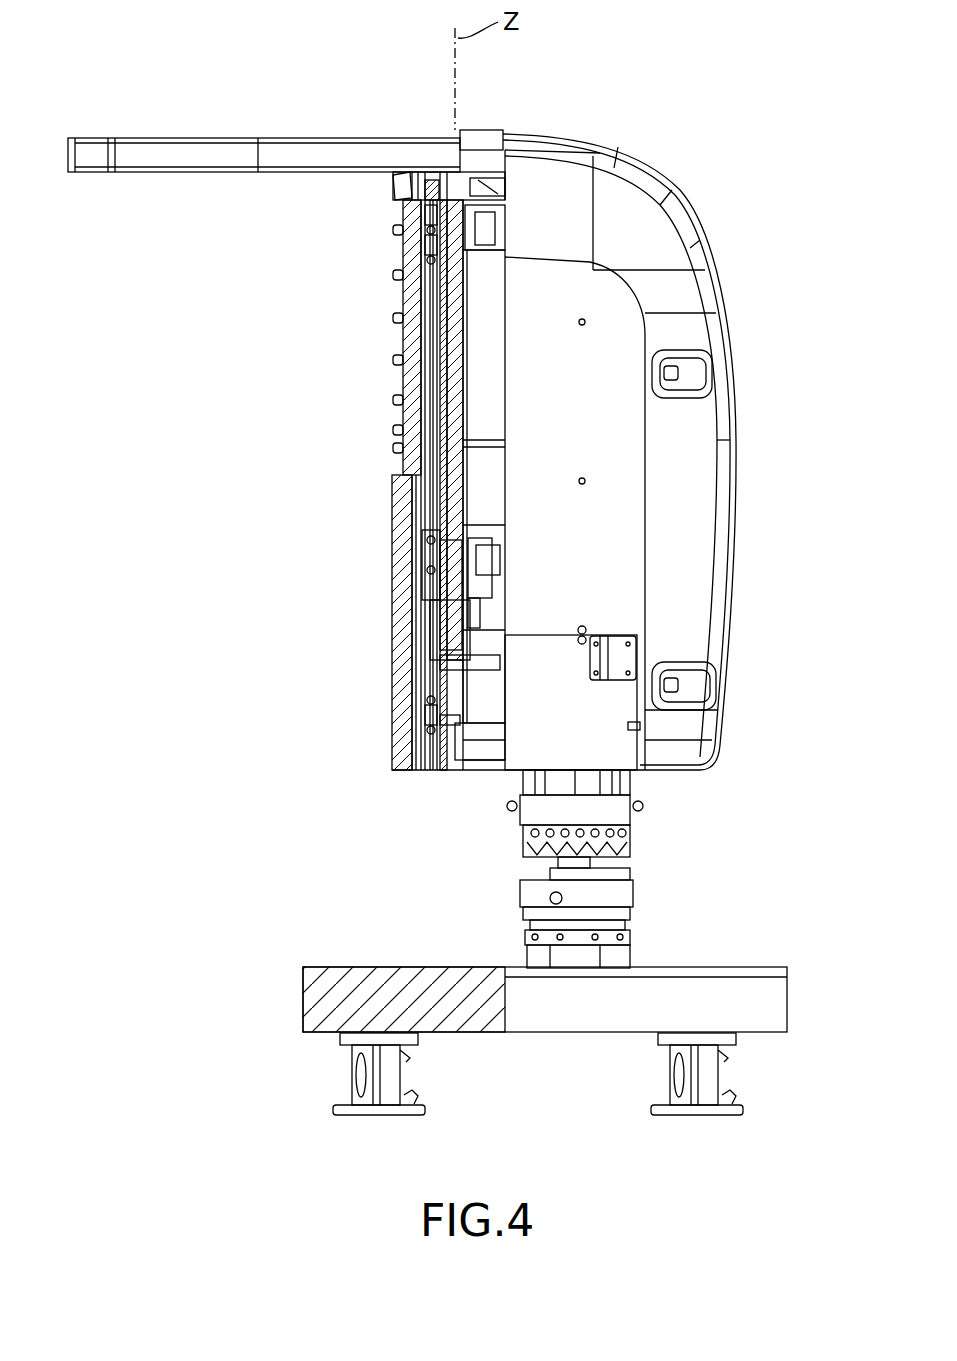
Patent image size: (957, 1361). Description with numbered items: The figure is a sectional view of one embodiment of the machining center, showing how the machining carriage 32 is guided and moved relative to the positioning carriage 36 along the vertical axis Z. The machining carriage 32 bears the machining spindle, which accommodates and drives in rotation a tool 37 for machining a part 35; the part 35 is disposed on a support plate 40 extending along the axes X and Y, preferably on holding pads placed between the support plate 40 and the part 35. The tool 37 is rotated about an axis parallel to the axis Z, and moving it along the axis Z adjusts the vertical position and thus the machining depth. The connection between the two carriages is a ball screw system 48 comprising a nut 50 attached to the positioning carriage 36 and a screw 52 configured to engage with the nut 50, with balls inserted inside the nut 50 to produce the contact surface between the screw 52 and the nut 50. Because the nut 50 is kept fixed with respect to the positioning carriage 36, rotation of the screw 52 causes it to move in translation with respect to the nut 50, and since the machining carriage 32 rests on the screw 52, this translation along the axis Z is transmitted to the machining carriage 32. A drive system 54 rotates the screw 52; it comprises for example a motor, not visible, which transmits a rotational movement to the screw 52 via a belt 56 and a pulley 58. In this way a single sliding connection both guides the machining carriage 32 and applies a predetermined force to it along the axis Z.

The machining carriage 32 is at (697, 214).
The part 35 is at (755, 1000).
The positioning carriage 36 is at (403, 655).
The tool 37 is at (604, 900).
The support plate 40 is at (473, 498).
The ball screw system 48 is at (462, 338).
The nut 50 is at (505, 577).
The screw 52 is at (432, 285).
The drive system 54 is at (441, 170).
The belt 56 is at (497, 189).
The pulley 58 is at (482, 190).